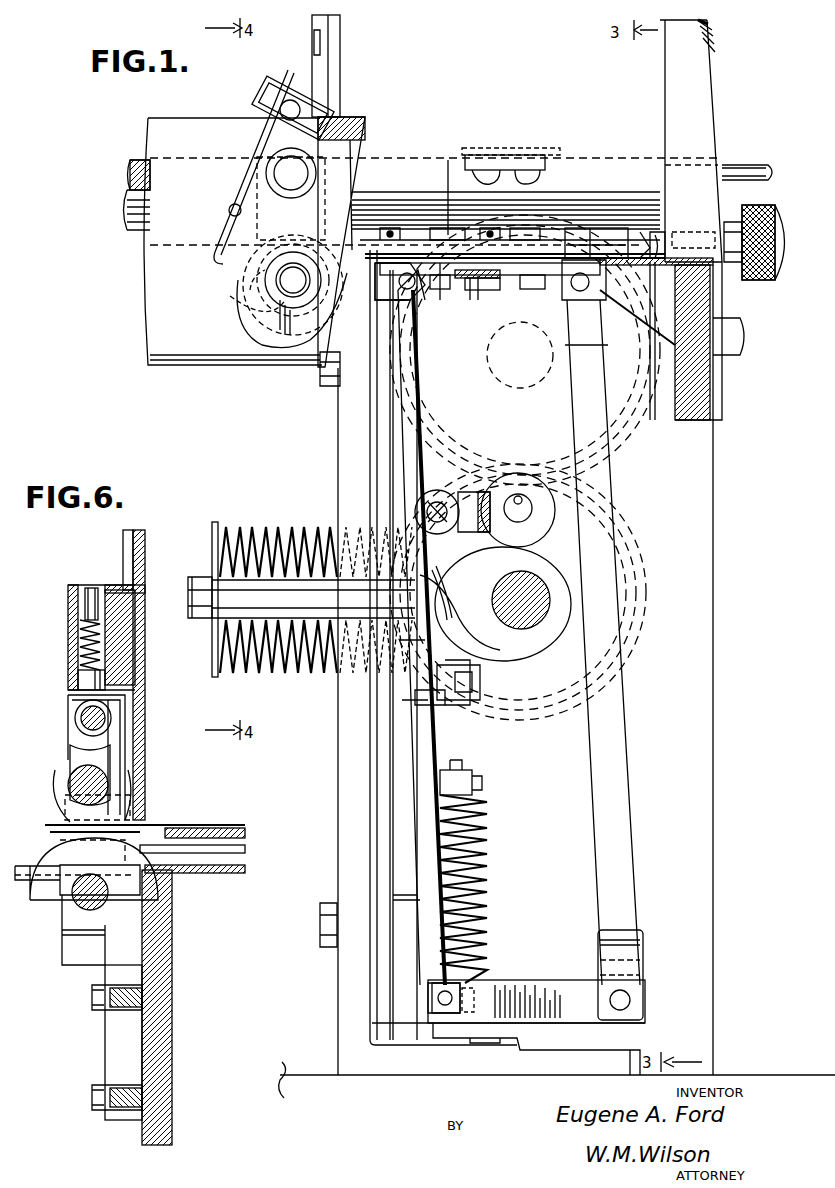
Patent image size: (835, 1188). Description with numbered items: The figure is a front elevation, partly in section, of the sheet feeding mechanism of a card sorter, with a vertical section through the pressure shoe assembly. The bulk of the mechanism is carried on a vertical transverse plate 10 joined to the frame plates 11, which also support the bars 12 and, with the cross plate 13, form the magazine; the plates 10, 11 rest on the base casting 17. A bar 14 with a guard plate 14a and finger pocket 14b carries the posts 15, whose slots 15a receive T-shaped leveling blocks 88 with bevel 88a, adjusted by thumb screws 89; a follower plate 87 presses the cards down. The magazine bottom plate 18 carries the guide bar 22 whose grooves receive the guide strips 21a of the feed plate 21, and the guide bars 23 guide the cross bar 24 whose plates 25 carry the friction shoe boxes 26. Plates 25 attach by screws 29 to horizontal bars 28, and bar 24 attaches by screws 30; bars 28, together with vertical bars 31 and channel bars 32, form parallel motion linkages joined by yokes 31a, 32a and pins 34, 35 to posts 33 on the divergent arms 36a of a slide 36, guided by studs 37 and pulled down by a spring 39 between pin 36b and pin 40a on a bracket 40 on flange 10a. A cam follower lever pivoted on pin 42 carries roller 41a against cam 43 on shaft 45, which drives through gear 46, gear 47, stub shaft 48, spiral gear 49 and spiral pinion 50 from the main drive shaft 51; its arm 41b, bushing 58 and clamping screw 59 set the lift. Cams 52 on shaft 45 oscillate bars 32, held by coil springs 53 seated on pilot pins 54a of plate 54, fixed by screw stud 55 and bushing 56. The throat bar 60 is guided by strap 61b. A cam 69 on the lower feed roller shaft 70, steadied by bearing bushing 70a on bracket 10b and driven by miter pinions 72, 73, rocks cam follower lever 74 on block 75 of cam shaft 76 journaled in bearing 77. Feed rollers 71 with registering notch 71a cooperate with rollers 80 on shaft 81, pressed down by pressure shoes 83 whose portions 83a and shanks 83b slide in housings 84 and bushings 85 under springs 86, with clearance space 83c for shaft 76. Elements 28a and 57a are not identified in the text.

In FIG. 1, the vertical transverse plate 10 is at (350, 1020).
In FIG. 6, the vertical transverse plate 10 is at (160, 985).
In FIG. 1, the flange 10a is at (520, 1072).
In FIG. 6, the bracket 10b is at (128, 1040).
In FIG. 1, the frame plate 11 is at (392, 32).
In FIG. 1, the bar 12 is at (192, 355).
In FIG. 1, the cross plate 13 is at (340, 45).
In FIG. 6, the cross plate 13 is at (140, 540).
In FIG. 1, the bar 14 is at (700, 344).
In FIG. 1, the guard plate 14a is at (612, 410).
In FIG. 1, the finger pocket 14b is at (632, 350).
In FIG. 1, the post 15 is at (698, 96).
In FIG. 1, the vertical slot 15a is at (686, 170).
In FIG. 1, the base casting 17 is at (301, 1082).
In FIG. 1, the magazine bottom plate 18 is at (660, 262).
In FIG. 6, the magazine bottom plate 18 is at (222, 874).
In FIG. 1, the feed plate 21 is at (576, 232).
In FIG. 6, the feed plate 21 is at (230, 830).
In FIG. 1, the guide strip 21a is at (560, 232).
In FIG. 1, the guide bar 22 is at (612, 250).
In FIG. 1, the guide bar 23 is at (502, 280).
In FIG. 1, the cross bar 24 is at (447, 280).
In FIG. 6, the plate 25 is at (242, 847).
In FIG. 6, the box 26 is at (180, 832).
In FIG. 1, the horizontal bar 28 is at (530, 278).
In FIG. 1, the bracket arm 28a is at (440, 285).
In FIG. 1, the screw 29 is at (388, 230).
In FIG. 1, the screw 30 is at (478, 290).
In FIG. 1, the vertical bar 31 is at (612, 790).
In FIG. 1, the yoke 31a is at (585, 345).
In FIG. 1, the vertical bar 32 is at (405, 736).
In FIG. 1, the yoke 32a is at (400, 300).
In FIG. 1, the post 33 is at (548, 988).
In FIG. 1, the pin 34 is at (578, 288).
In FIG. 1, the pin 35 is at (400, 285).
In FIG. 1, the slide 36 is at (382, 822).
In FIG. 1, the divergent arm 36a is at (387, 940).
In FIG. 1, the pin 36b is at (480, 782).
In FIG. 1, the stud 37 is at (322, 378).
In FIG. 1, the spring 39 is at (486, 845).
In FIG. 1, the bracket 40 is at (515, 1050).
In FIG. 1, the pin 40a is at (480, 995).
In FIG. 1, the roller 41a is at (556, 512).
In FIG. 1, the arm 41b is at (505, 612).
In FIG. 1, the pin 42 is at (440, 508).
In FIG. 1, the cam 43 is at (478, 540).
In FIG. 1, the shaft 45 is at (540, 615).
In FIG. 1, the gear 46 is at (628, 652).
In FIG. 1, the gear 47 is at (598, 445).
In FIG. 1, the stub shaft 48 is at (492, 366).
In FIG. 1, the spiral gear 49 is at (612, 428).
In FIG. 1, the spiral pinion 50 is at (550, 156).
In FIG. 1, the main drive shaft 51 is at (752, 166).
In FIG. 1, the cam 52 is at (555, 600).
In FIG. 1, the coil spring 53 is at (280, 618).
In FIG. 1, the plate 54 is at (212, 650).
In FIG. 1, the pilot pin 54a is at (240, 540).
In FIG. 1, the screw stud 55 is at (200, 578).
In FIG. 1, the bushing 56 is at (240, 596).
In FIG. 1, the post 57a is at (448, 228).
In FIG. 1, the bushing 58 is at (446, 702).
In FIG. 1, the clamping screw 59 is at (482, 690).
In FIG. 6, the bar 60 is at (125, 548).
In FIG. 6, the strap 61b is at (62, 805).
In FIG. 1, the cam 69 is at (270, 330).
In FIG. 1, the lower feed roller shaft 70 is at (290, 280).
In FIG. 6, the lower feed roller shaft 70 is at (80, 895).
In FIG. 6, the bearing bushing 70a is at (88, 938).
In FIG. 1, the feed roller 71 is at (240, 290).
In FIG. 6, the feed roller 71 is at (135, 882).
In FIG. 6, the sheet registering notch 71a is at (52, 850).
In FIG. 1, the miter pinion 72 is at (212, 252).
In FIG. 1, the miter pinion 73 is at (229, 226).
In FIG. 1, the cam follower lever 74 is at (250, 185).
In FIG. 1, the block 75 is at (300, 78).
In FIG. 1, the cam shaft 76 is at (294, 110).
In FIG. 6, the cam shaft 76 is at (96, 718).
In FIG. 1, the bearing 77 is at (314, 38).
In FIG. 1, the roller 80 is at (348, 134).
In FIG. 6, the roller 80 is at (55, 780).
In FIG. 1, the shaft 81 is at (288, 172).
In FIG. 6, the shaft 81 is at (80, 780).
In FIG. 6, the pressure shoe 83 is at (118, 742).
In FIG. 6, the reduced cylindrical portion 83a is at (78, 678).
In FIG. 6, the shank 83b is at (138, 590).
In FIG. 6, the clearance space 83c is at (100, 765).
In FIG. 6, the housing 84 is at (70, 595).
In FIG. 6, the bushing 85 is at (90, 590).
In FIG. 6, the spring 86 is at (78, 630).
In FIG. 1, the follower plate 87 is at (488, 165).
In FIG. 1, the T-shaped block 88 is at (686, 235).
In FIG. 1, the bevel 88a is at (650, 236).
In FIG. 1, the thumb screw 89 is at (757, 245).